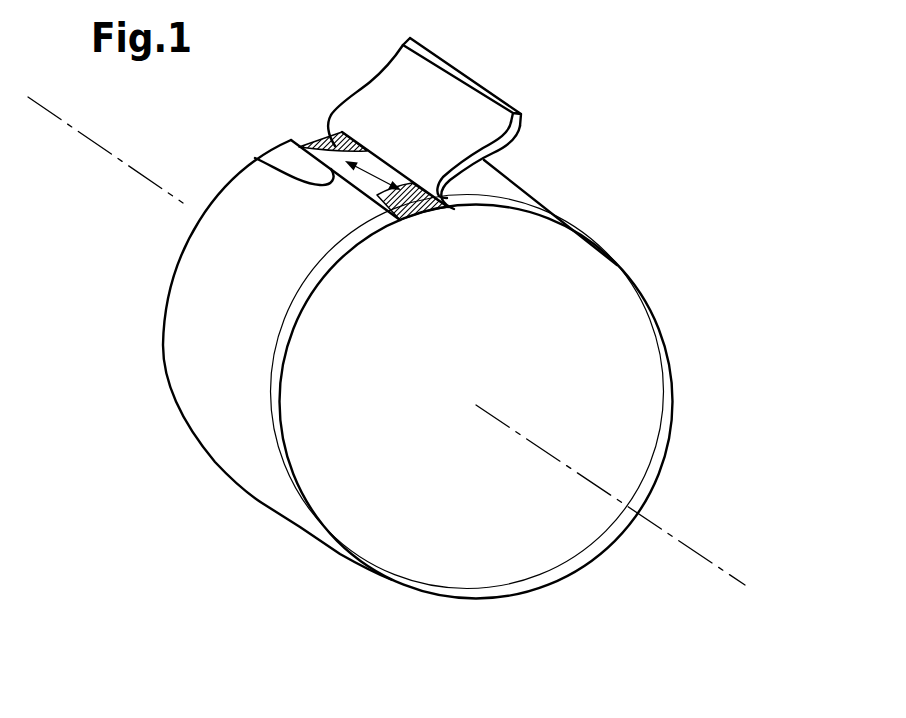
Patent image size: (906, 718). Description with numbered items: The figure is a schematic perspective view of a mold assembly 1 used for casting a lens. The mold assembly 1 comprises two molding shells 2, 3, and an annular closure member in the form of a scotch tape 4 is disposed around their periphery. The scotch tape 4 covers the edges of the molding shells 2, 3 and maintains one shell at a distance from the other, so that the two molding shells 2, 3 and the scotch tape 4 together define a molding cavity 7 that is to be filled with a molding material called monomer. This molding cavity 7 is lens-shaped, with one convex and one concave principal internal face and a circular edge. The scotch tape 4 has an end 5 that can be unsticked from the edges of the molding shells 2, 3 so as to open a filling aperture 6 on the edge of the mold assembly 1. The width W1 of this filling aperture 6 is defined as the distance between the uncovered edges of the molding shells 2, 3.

The mold assembly 1 is at (408, 301).
The molding shell 2 is at (513, 282).
The molding shell 3 is at (313, 141).
The scotch tape 4 is at (185, 378).
The end 5 is at (471, 77).
The filling aperture 6 is at (255, 158).
The molding cavity 7 is at (361, 130).
The width of the filling aperture W1 is at (350, 168).